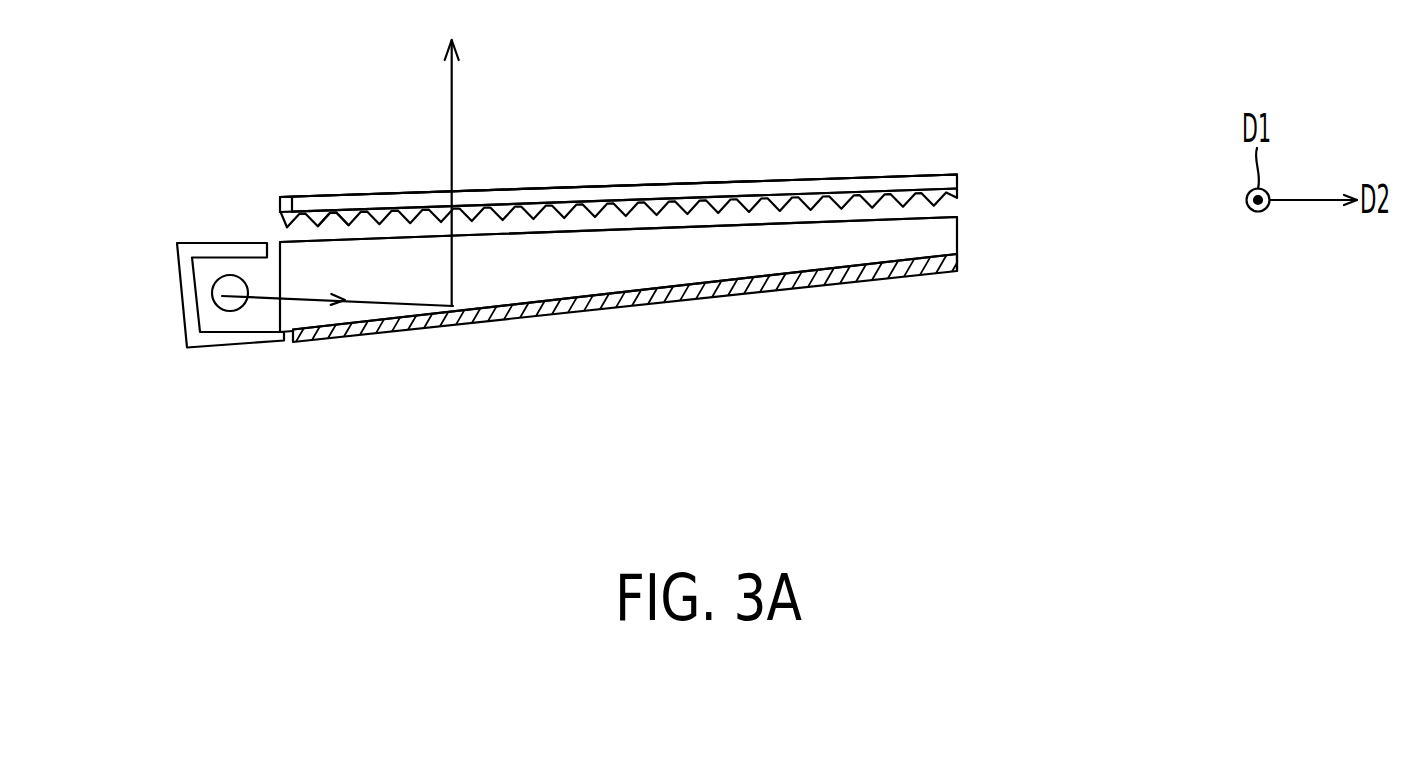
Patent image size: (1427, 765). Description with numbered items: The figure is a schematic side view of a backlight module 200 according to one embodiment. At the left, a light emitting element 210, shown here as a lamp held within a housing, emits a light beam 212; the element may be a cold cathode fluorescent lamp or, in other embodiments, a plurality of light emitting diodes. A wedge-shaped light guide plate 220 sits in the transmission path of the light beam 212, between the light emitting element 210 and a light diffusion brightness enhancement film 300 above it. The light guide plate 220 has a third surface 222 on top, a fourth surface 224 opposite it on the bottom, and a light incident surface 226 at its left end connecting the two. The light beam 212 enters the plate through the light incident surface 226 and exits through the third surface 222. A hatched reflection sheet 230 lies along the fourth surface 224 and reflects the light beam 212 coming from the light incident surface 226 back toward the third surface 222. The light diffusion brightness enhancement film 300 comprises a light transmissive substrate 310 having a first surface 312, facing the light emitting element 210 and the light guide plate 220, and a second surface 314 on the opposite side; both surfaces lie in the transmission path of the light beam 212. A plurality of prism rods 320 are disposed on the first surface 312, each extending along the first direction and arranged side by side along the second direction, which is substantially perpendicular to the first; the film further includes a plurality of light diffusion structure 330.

The backlight module 200 is at (1143, 423).
The light emitting element 210 is at (222, 296).
The light beam 212 is at (309, 298).
The light guide plate 220 is at (930, 237).
The third surface 222 is at (893, 217).
The fourth surface 224 is at (934, 274).
The light incident surface 226 is at (275, 308).
The reflection sheet 230 is at (862, 282).
The light diffusion brightness enhancement film 300 is at (292, 205).
The light transmissive substrate 310 is at (607, 190).
The first surface 312 is at (386, 212).
The second surface 314 is at (368, 193).
The prism rods 320 is at (291, 199).
The light diffusion structure 330 is at (341, 212).